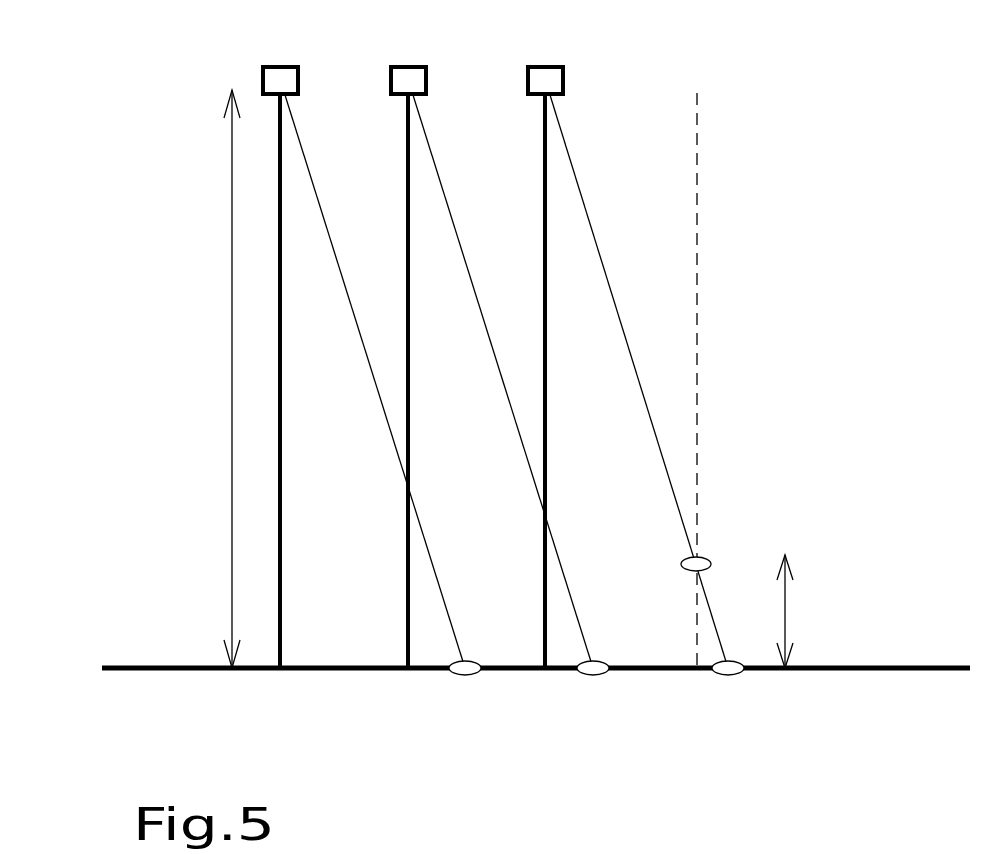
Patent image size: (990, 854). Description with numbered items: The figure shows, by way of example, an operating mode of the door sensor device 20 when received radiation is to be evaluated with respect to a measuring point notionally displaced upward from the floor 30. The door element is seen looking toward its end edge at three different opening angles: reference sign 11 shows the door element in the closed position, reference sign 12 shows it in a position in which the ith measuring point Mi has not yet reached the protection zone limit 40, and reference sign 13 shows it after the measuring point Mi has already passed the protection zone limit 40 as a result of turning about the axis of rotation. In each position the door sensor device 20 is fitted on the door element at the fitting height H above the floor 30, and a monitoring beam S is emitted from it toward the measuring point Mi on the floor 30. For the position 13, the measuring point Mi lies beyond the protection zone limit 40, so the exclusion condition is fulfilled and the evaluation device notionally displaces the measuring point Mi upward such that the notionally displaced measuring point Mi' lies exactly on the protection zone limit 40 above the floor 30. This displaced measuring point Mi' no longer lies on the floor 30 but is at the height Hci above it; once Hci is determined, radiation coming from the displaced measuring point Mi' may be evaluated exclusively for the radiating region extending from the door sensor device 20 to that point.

The door element in closed position 11 is at (281, 455).
The door element in intermediate position 12 is at (409, 358).
The door element in further opened position 13 is at (546, 327).
The door sensor device 20 is at (288, 66).
The floor 30 is at (850, 665).
The protection zone limit 40 is at (697, 420).
The monitoring beam S is at (328, 237).
The fitting height H is at (216, 379).
The height of notionally displaced measuring point Hci is at (807, 607).
The ith measuring point Mi is at (589, 700).
The notionally displaced measuring point Mi' is at (672, 584).